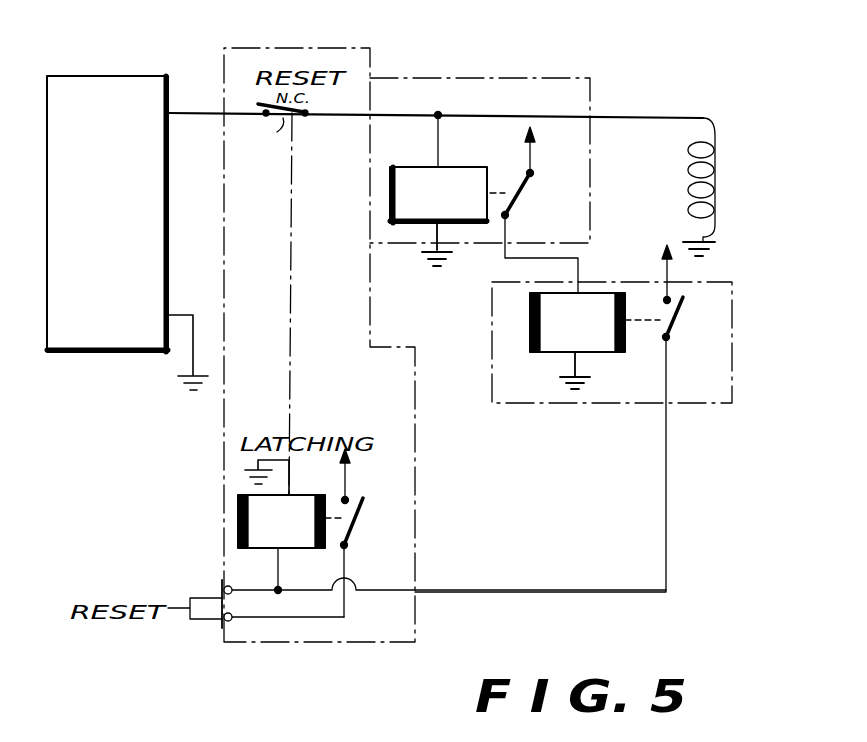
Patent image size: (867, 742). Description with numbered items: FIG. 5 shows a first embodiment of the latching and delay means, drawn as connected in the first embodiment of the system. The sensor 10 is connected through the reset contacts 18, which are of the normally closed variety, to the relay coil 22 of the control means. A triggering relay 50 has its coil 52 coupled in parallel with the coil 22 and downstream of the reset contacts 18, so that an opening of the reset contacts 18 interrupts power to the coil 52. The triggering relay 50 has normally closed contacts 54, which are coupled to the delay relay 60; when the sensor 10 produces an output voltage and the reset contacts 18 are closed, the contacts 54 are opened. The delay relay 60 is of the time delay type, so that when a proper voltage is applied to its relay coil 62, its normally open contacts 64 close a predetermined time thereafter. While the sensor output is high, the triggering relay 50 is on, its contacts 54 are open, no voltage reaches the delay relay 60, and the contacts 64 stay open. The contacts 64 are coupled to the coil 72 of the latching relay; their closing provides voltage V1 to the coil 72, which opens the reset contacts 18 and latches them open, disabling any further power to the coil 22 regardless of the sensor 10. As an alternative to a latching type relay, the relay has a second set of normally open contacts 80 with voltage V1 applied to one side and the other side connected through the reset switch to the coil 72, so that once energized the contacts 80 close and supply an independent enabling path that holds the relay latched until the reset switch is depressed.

The sensor 10 is at (105, 86).
The reset contacts 18 is at (275, 299).
The relay coil 22 is at (728, 186).
The triggering relay 50 is at (577, 85).
The coil 52 is at (452, 210).
The normally closed contacts 54 is at (512, 197).
The delay relay 60 is at (753, 410).
The relay coil 62 is at (592, 345).
The contacts 64 is at (676, 325).
The coil 72 is at (300, 544).
The second set of contacts 80 is at (362, 512).